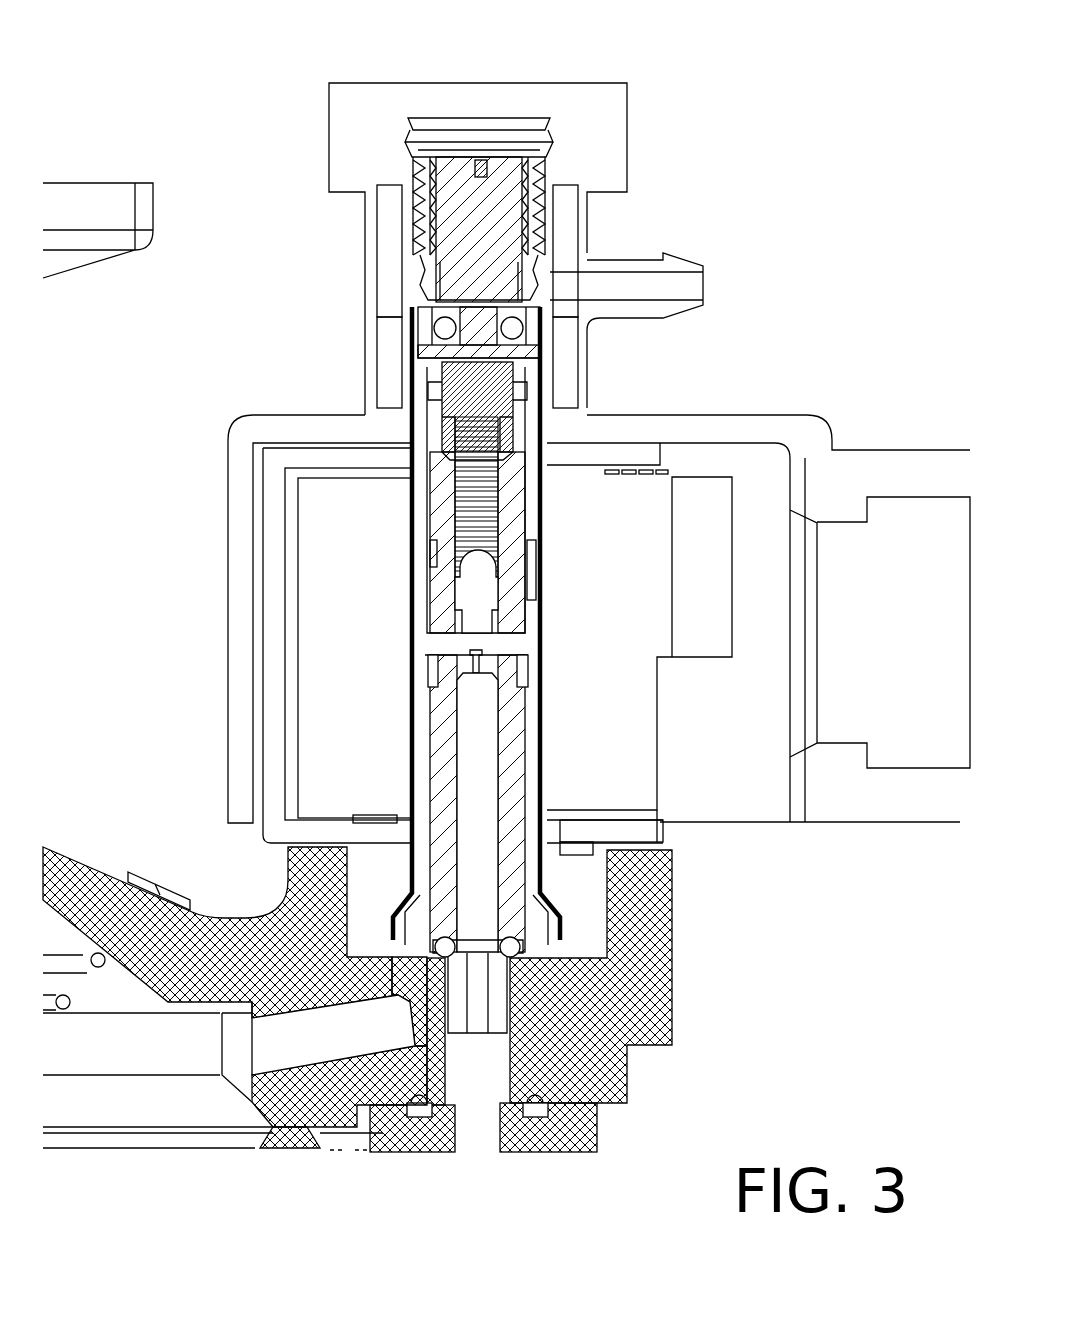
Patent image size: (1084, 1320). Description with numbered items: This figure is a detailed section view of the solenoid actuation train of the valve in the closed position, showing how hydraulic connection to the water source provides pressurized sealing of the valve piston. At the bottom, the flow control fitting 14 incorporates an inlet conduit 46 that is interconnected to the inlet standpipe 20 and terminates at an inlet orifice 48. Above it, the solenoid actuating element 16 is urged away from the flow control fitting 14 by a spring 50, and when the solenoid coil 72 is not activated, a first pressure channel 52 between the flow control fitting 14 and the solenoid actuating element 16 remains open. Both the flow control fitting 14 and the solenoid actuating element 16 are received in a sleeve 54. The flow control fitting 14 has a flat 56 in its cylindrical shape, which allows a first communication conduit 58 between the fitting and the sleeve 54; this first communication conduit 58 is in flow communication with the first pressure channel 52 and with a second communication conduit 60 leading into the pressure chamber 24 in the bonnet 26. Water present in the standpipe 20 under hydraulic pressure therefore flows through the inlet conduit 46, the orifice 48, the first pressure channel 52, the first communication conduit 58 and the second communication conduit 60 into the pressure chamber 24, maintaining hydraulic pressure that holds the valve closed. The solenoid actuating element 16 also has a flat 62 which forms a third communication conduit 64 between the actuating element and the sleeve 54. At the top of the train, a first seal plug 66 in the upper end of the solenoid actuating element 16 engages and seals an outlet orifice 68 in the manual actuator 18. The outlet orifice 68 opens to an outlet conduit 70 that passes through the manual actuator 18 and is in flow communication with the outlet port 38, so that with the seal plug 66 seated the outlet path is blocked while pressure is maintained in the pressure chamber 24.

The flow control fitting 14 is at (517, 822).
The solenoid actuating element 16 is at (540, 490).
The manual actuator 18 is at (477, 212).
The inlet standpipe 20 is at (487, 1127).
The pressure chamber 24 is at (125, 877).
The bonnet 26 is at (93, 995).
The outlet port 38 is at (667, 290).
The inlet conduit 46 is at (478, 873).
The inlet orifice 48 is at (488, 643).
The spring 50 is at (545, 568).
The first pressure channel 52 is at (447, 641).
The sleeve 54 is at (407, 513).
The flat 56 is at (432, 810).
The first communication conduit 58 is at (425, 740).
The second communication conduit 60 is at (297, 1040).
The flat 62 is at (430, 473).
The third communication conduit 64 is at (422, 417).
The first seal plug 66 is at (480, 385).
The outlet orifice 68 is at (473, 360).
The outlet conduit 70 is at (477, 313).
The solenoid coil 72 is at (655, 603).